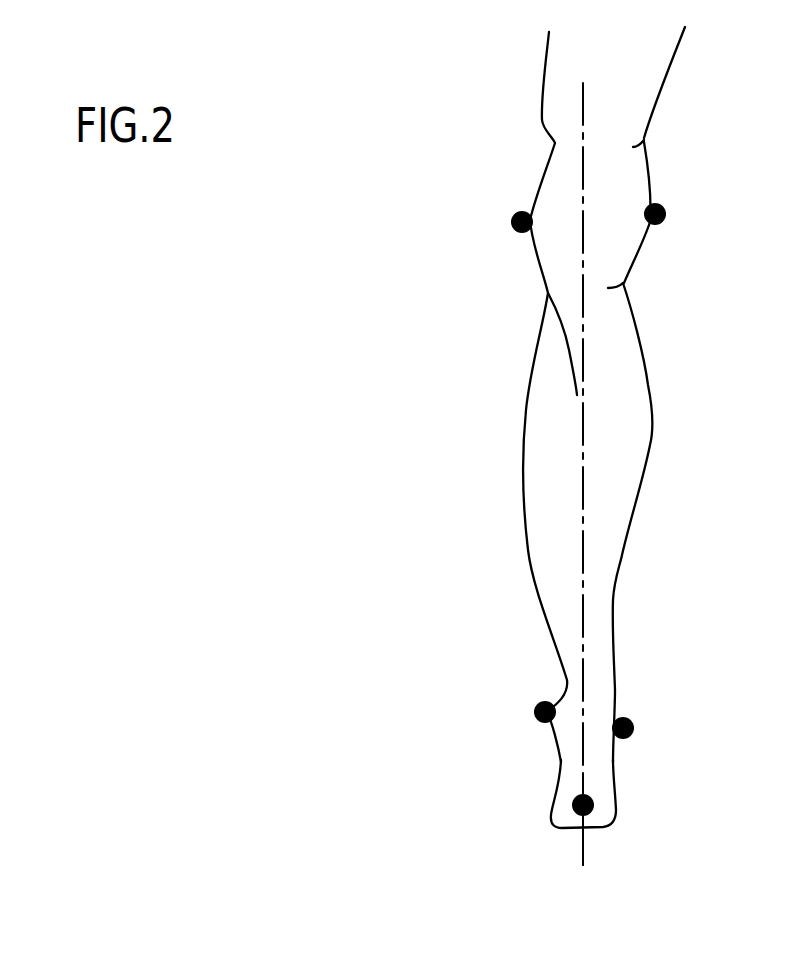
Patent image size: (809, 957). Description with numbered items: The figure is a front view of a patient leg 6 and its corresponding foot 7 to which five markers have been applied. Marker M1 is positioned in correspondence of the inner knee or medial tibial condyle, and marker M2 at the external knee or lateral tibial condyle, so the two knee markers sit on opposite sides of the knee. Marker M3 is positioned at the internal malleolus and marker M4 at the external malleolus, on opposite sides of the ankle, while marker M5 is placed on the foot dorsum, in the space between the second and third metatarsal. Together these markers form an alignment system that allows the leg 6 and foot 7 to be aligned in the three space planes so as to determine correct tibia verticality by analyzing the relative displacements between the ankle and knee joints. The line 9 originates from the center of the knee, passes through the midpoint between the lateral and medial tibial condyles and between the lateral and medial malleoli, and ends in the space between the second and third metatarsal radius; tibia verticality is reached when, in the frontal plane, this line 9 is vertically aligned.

The marker M1 is at (666, 210).
The marker M2 is at (514, 218).
The marker M3 is at (633, 727).
The marker M4 is at (537, 710).
The marker M5 is at (591, 811).
The leg 6 is at (524, 443).
The foot 7 is at (607, 798).
The line 9 is at (580, 851).